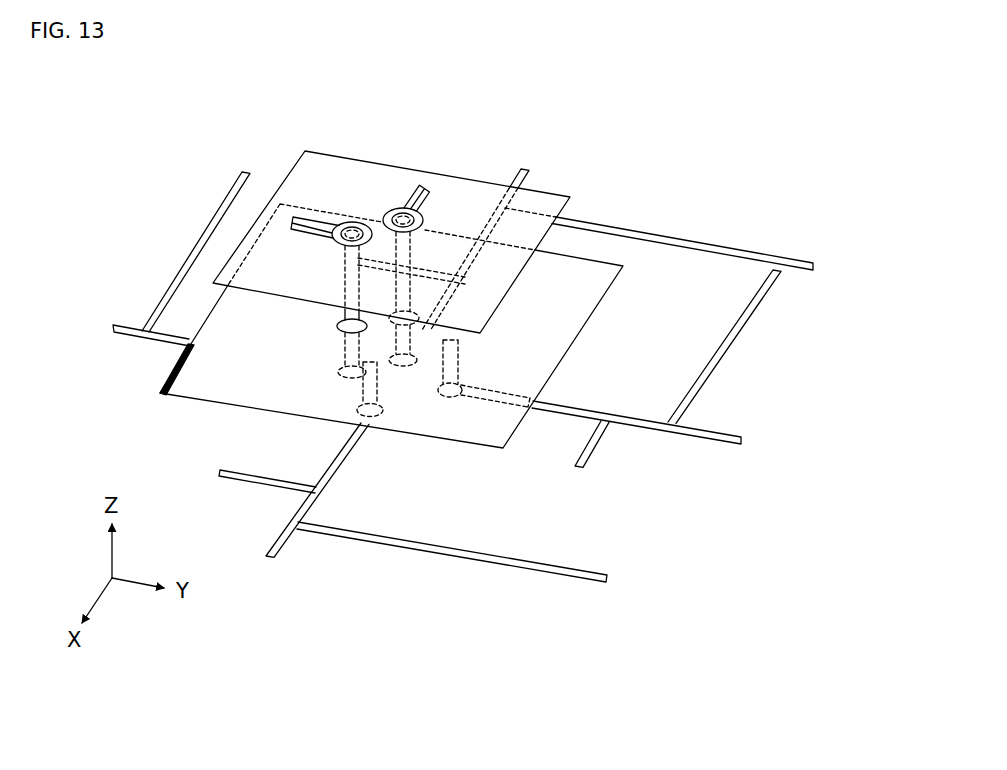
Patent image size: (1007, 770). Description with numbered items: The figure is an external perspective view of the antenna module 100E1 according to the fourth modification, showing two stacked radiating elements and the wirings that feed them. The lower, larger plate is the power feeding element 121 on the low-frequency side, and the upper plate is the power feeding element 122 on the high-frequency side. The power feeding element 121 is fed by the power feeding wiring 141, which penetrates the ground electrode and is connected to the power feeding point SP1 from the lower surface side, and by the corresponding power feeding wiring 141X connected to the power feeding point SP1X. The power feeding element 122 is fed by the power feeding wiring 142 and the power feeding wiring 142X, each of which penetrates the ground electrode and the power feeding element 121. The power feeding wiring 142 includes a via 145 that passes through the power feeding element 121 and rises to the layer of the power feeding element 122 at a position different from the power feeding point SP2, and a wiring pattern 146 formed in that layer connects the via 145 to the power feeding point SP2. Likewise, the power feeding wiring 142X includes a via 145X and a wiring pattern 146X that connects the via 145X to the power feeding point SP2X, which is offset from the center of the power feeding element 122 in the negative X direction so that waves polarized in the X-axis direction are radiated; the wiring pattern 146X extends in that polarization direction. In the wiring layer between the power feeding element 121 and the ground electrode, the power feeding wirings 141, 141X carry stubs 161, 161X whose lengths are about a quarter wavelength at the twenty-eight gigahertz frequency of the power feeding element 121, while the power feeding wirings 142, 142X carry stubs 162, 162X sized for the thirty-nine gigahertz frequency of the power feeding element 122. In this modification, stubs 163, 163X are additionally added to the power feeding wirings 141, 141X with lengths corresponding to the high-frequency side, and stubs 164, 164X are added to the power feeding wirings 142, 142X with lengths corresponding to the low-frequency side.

The antenna module 100E1 is at (720, 126).
The power feeding element 121 is at (545, 365).
The power feeding element 122 is at (313, 178).
The power feeding wiring 141 is at (646, 429).
The power feeding wiring 141X is at (326, 492).
The power feeding wiring 142 is at (145, 338).
The power feeding wiring 142X is at (527, 170).
The via 145 is at (340, 318).
The via 145X is at (403, 298).
The wiring pattern 146 is at (309, 224).
The wiring pattern 146X is at (423, 193).
The stub 161 is at (723, 348).
The stub 161X is at (494, 557).
The stub 162 is at (183, 369).
The stub 162X is at (385, 262).
The stub 163 is at (575, 468).
The stub 163X is at (238, 480).
The stub 164 is at (178, 281).
The stub 164X is at (698, 245).
The power feeding point SP1 is at (447, 340).
The power feeding point SP1X is at (373, 363).
The power feeding point SP2 is at (296, 220).
The power feeding point SP2X is at (421, 186).